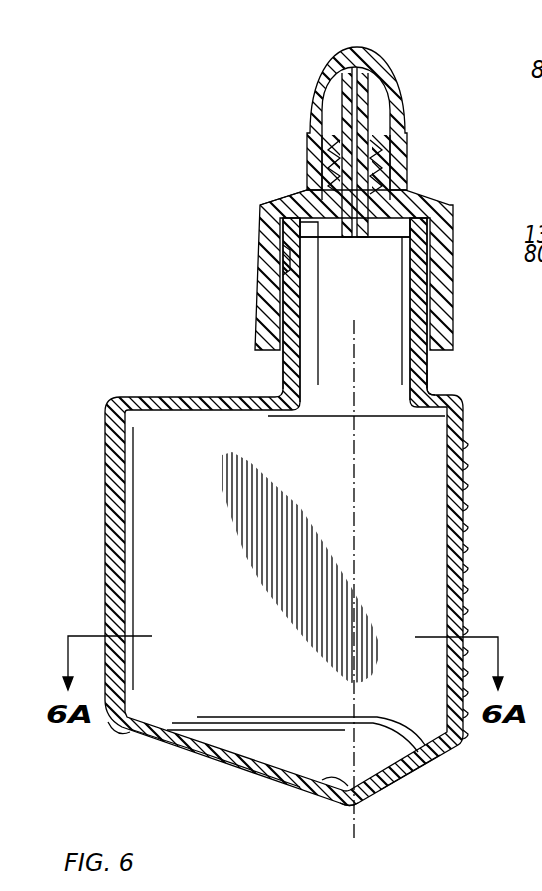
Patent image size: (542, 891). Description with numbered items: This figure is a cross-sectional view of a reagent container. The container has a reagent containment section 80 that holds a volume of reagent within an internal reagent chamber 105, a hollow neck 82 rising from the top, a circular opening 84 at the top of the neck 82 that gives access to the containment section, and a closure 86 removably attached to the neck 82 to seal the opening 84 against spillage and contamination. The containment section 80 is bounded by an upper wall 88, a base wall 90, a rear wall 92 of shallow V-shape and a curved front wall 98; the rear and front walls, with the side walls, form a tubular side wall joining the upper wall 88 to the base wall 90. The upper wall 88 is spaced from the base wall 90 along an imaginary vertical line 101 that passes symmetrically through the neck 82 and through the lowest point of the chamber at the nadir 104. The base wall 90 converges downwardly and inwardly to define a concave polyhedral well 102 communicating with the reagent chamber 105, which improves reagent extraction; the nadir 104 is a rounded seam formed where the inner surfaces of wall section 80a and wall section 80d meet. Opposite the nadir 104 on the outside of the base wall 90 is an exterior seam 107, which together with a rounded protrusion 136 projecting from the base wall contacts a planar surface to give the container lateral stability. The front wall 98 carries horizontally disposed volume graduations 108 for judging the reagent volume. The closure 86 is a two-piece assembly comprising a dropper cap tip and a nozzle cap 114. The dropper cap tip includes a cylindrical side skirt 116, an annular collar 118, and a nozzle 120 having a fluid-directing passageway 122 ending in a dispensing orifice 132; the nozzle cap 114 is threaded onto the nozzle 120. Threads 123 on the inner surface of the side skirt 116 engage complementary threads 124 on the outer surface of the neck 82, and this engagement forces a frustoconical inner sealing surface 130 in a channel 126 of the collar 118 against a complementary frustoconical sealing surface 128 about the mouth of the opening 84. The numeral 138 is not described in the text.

The reagent containment section 80 is at (105, 549).
The wall section 80a is at (187, 752).
The wall section 80d is at (420, 765).
The neck 82 is at (432, 365).
The opening 84 is at (381, 238).
The closure 86 is at (240, 293).
The upper wall 88 is at (205, 395).
The base wall 90 is at (259, 776).
The rear wall 92 is at (104, 476).
The front wall 98 is at (465, 531).
The imaginary vertical line 101 is at (356, 447).
The well 102 is at (346, 770).
The nadir 104 is at (332, 780).
The reagent chamber 105 is at (236, 627).
The exterior seam 107 is at (352, 797).
The volume graduations 108 is at (466, 615).
The nozzle cap 114 is at (322, 80).
The side skirt 116 is at (256, 322).
The annular collar 118 is at (302, 200).
The nozzle 120 is at (388, 107).
The fluid-directing passageway 122 is at (358, 135).
The threads 123 is at (284, 252).
The threads 124 is at (293, 262).
The channel 126 is at (283, 215).
The frustoconical sealing surface 128 is at (305, 222).
The frustoconical inner sealing surface 130 is at (297, 234).
The dispensing orifice 132 is at (357, 66).
The protrusion 136 is at (110, 738).
The shoulder 138 is at (150, 397).